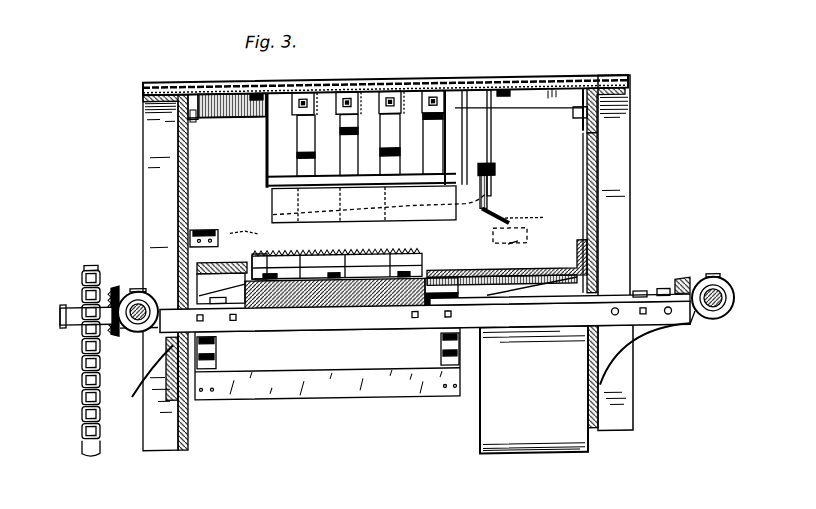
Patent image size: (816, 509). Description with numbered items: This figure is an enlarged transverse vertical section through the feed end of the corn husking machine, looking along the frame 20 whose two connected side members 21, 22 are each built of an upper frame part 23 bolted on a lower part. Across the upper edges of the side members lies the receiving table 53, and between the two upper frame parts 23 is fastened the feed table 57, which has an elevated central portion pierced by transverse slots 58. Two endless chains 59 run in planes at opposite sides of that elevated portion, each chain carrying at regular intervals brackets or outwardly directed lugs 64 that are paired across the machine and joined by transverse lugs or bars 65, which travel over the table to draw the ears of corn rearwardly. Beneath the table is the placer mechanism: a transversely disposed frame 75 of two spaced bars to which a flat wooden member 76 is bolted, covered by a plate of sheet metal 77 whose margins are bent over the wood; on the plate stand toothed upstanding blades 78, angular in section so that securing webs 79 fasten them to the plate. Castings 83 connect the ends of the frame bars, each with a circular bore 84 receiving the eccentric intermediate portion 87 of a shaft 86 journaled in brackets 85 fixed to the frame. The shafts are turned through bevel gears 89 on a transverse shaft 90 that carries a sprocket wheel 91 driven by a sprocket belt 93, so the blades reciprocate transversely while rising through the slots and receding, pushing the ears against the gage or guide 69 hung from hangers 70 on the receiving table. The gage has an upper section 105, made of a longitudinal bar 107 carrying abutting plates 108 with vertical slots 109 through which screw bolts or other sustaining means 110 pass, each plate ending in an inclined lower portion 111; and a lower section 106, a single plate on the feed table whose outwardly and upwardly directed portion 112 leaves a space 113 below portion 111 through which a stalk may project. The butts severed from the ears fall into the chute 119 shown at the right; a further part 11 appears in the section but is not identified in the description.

The carriage bed 11 is at (262, 257).
The frame 20 is at (186, 443).
The side member 21 is at (620, 418).
The side member 22 is at (160, 455).
The upper frame part 23 is at (183, 248).
The receiving table 53 is at (410, 95).
The feed table 57 is at (530, 278).
The transverse slots 58 is at (502, 288).
The endless chains 59 is at (180, 262).
The brackets or outwardly directed lugs 64 is at (208, 233).
The transverse lugs or bars 65 is at (238, 236).
The gage or guide 69 is at (462, 246).
The hangers 70 is at (491, 146).
The transversely-disposed frame 75 is at (552, 333).
The flat wooden member 76 is at (336, 309).
The plate of sheet metal 77 is at (377, 279).
The toothed upstanding blades 78 is at (314, 267).
The securing webs 79 is at (354, 275).
The castings 83 is at (147, 331).
The circular bore 84 is at (132, 293).
The brackets 85 is at (638, 350).
The shaft 86 is at (110, 338).
The eccentric intermediate portion 87 is at (136, 309).
The bevel gears 89 is at (82, 378).
The transverse shaft 90 is at (525, 312).
The sprocket wheel 91 is at (88, 267).
The sprocket belt 93 is at (83, 426).
The upper section 105 is at (485, 162).
The lower section 106 is at (532, 288).
The longitudinal bar 107 is at (496, 175).
The abutting plates 108 is at (491, 198).
The vertical slots 109 is at (480, 181).
The screw bolts or other sustaining means 110 is at (480, 175).
The inclined lower portion 111 is at (512, 227).
The outwardly and upwardly directed portion 112 is at (530, 245).
The space 113 is at (515, 250).
The chute 119 is at (548, 410).